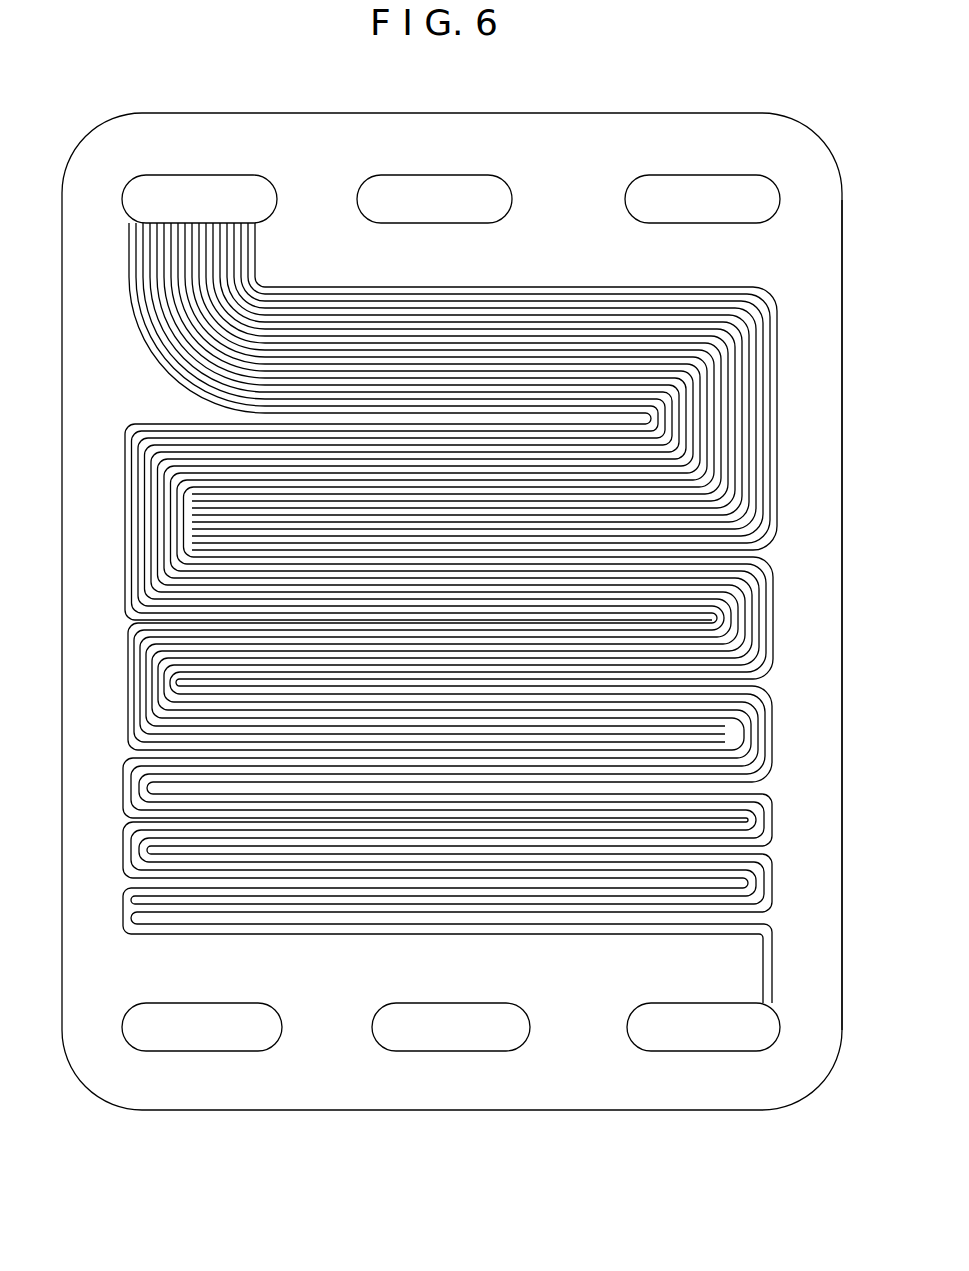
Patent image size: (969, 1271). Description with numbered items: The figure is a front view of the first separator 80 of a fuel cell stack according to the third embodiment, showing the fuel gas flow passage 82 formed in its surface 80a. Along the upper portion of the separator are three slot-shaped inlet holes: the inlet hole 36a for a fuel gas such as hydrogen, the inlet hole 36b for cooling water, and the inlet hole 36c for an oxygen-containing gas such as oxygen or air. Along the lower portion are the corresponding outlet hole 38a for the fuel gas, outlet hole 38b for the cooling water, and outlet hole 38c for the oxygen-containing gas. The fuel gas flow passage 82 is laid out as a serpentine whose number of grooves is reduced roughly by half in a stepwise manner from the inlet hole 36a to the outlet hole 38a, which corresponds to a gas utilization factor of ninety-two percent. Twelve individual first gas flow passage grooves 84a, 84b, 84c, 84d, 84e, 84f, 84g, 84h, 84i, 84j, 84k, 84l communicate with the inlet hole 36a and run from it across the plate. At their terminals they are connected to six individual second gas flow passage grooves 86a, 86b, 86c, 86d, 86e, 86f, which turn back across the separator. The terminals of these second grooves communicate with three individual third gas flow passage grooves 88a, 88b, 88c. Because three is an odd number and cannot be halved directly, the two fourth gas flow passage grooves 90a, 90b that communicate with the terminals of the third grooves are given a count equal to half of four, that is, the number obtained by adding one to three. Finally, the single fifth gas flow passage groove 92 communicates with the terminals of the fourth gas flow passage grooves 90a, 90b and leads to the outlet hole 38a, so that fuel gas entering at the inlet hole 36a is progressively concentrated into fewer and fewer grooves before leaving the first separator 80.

The first separator 80 is at (624, 105).
The surface 80a is at (839, 220).
The fuel gas flow passage 82 is at (309, 287).
The inlet hole 36a is at (190, 201).
The inlet hole 36b is at (426, 201).
The inlet hole 36c is at (678, 201).
The outlet hole 38a is at (696, 1038).
The outlet hole 38b is at (448, 1038).
The outlet hole 38c is at (194, 1038).
The first gas flow passage groove 84a is at (408, 287).
The first gas flow passage groove 84b is at (427, 310).
The first gas flow passage groove 84c is at (460, 320).
The first gas flow passage groove 84d is at (500, 330).
The first gas flow passage groove 84e is at (540, 343).
The first gas flow passage groove 84f is at (581, 358).
The first gas flow passage groove 84g is at (702, 357).
The first gas flow passage groove 84h is at (688, 380).
The first gas flow passage groove 84i is at (678, 404).
The first gas flow passage groove 84j is at (666, 420).
The first gas flow passage groove 84k is at (656, 426).
The first gas flow passage groove 84l is at (643, 428).
The second gas flow passage groove 86a is at (132, 630).
The second gas flow passage groove 86b is at (137, 658).
The second gas flow passage groove 86c is at (148, 682).
The second gas flow passage groove 86d is at (166, 698).
The second gas flow passage groove 86e is at (174, 705).
The second gas flow passage groove 86f is at (188, 695).
The third gas flow passage groove 88a is at (818, 735).
The third gas flow passage groove 88b is at (818, 772).
The third gas flow passage groove 88c is at (818, 813).
The fourth gas flow passage groove 90a is at (818, 898).
The fourth gas flow passage groove 90b is at (600, 934).
The fifth gas flow passage groove 92 is at (775, 936).